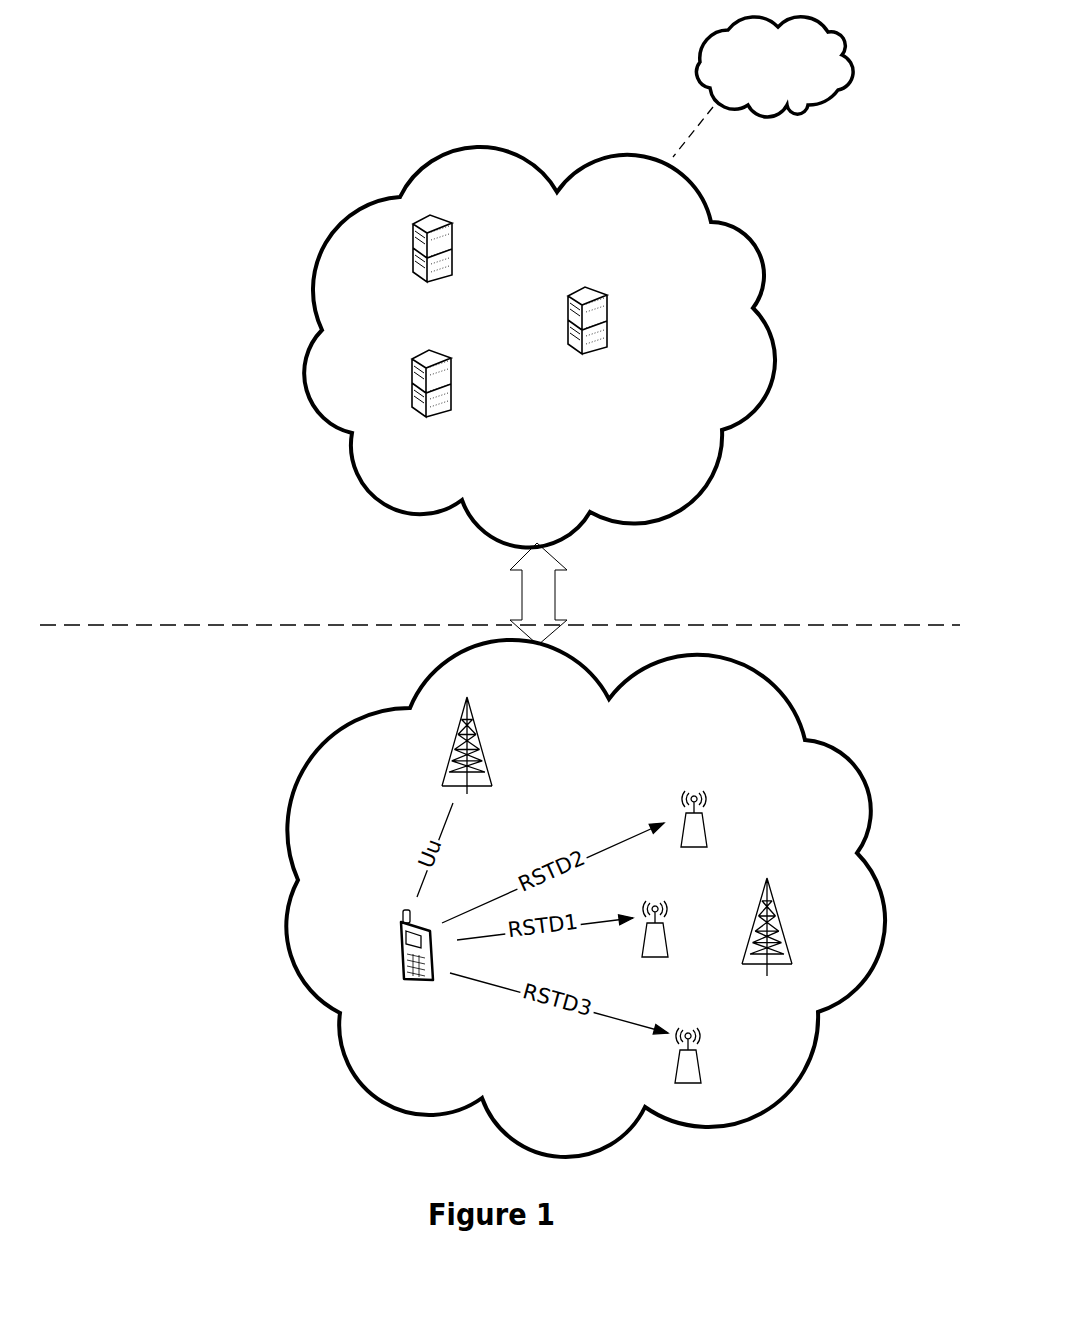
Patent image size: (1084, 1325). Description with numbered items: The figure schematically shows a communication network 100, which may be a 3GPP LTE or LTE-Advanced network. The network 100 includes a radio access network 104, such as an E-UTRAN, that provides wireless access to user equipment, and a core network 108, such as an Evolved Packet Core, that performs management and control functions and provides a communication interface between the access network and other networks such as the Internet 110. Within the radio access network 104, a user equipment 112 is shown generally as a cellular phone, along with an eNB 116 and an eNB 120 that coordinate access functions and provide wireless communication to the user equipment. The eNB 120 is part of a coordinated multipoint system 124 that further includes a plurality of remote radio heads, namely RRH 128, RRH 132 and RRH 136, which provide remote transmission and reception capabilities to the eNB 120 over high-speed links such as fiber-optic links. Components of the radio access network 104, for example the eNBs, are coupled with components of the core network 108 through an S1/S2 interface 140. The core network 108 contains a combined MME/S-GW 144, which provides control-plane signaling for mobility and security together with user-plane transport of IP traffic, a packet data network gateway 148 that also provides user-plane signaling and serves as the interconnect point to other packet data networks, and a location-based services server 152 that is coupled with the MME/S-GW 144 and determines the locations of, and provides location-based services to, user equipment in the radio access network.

The communication network 100 is at (136, 50).
The radio access network 104 is at (280, 952).
The core network 108 is at (448, 153).
The Internet 110 is at (698, 55).
The user equipment 112 is at (397, 938).
The eNB 116 is at (452, 745).
The eNB 120 is at (773, 893).
The coordinated multipoint system 124 is at (764, 802).
The RRH 128 is at (663, 958).
The RRH 132 is at (707, 835).
The RRH 136 is at (701, 1063).
The S1/S2 interface 140 is at (533, 561).
The MME/S-GW 144 is at (451, 385).
The packet data network gateway 148 is at (452, 228).
The location-based services server 152 is at (607, 345).